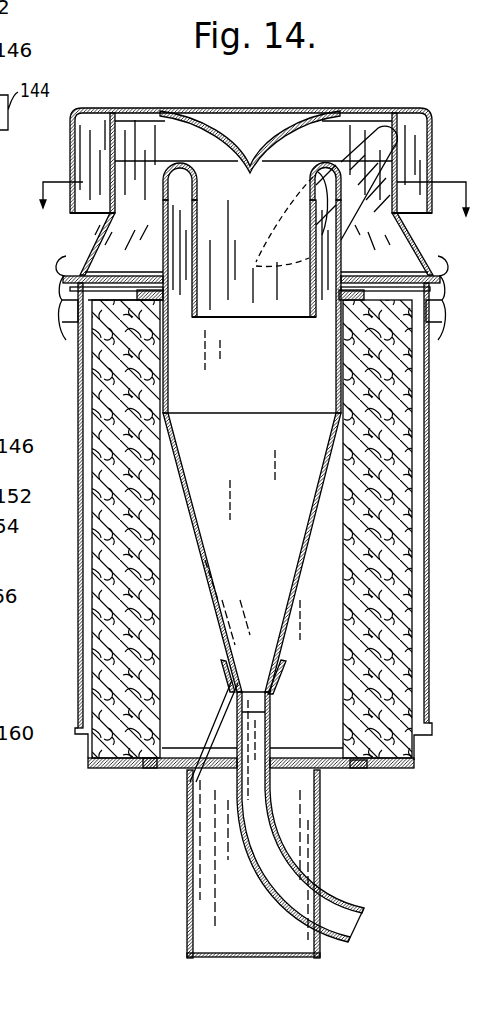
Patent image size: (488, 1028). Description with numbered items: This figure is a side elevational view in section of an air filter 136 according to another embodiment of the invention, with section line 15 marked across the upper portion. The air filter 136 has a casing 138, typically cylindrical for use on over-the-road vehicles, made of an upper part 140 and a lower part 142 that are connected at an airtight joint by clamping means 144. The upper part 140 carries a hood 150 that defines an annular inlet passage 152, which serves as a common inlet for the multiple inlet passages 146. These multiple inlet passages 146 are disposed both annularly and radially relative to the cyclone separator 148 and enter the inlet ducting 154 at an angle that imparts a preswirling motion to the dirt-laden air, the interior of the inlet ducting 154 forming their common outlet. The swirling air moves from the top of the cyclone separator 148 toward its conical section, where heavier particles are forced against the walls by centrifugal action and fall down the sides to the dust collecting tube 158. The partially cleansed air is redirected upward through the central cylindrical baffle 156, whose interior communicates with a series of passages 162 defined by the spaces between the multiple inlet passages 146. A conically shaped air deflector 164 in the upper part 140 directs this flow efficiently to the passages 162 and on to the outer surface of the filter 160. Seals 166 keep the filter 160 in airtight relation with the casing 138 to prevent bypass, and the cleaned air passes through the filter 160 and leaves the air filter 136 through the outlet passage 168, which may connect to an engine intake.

The section line 15- 15 is at (254, 215).
The air filter 136 is at (357, 100).
The casing 138 is at (80, 420).
The upper part 140 is at (90, 242).
The lower part 142 is at (80, 378).
The clamping means 144 is at (67, 312).
The multiple inlet passages 146 is at (388, 150).
The cyclone separator 148 is at (294, 440).
The hood 150 is at (434, 133).
The annular inlet passage 152 is at (88, 124).
The inlet ducting 154 is at (183, 184).
The central cylindrical baffle 156 is at (304, 307).
The dust collecting tube 158 is at (268, 811).
The filter 160 is at (116, 556).
The passages 162 is at (133, 193).
The conically shaped air deflector 164 is at (283, 126).
The seals 166 is at (83, 300).
The outlet passage 168 is at (265, 943).